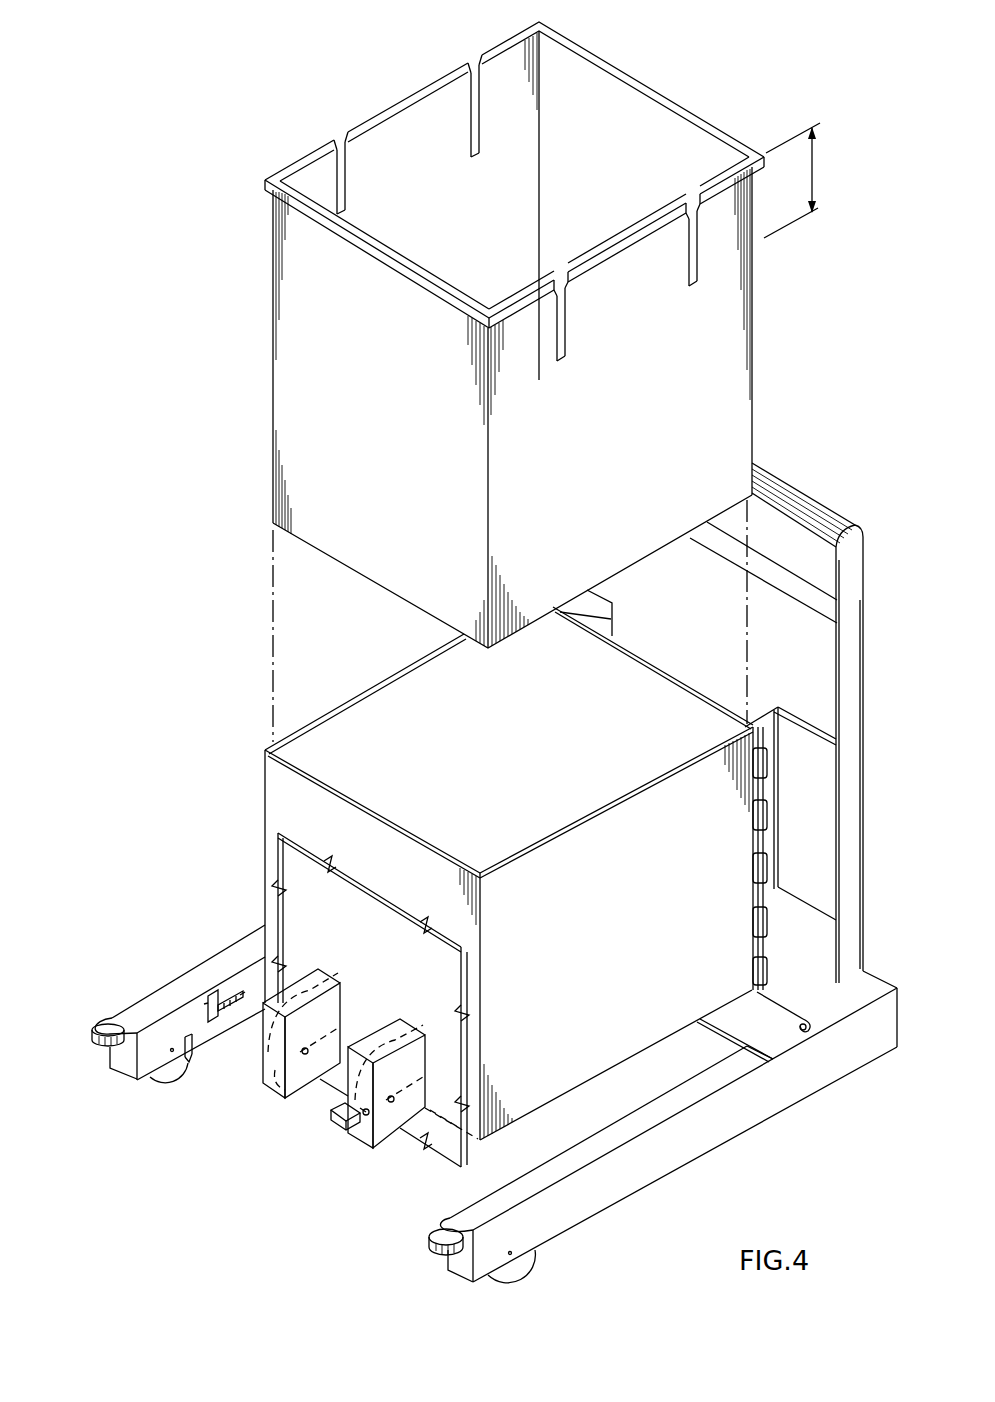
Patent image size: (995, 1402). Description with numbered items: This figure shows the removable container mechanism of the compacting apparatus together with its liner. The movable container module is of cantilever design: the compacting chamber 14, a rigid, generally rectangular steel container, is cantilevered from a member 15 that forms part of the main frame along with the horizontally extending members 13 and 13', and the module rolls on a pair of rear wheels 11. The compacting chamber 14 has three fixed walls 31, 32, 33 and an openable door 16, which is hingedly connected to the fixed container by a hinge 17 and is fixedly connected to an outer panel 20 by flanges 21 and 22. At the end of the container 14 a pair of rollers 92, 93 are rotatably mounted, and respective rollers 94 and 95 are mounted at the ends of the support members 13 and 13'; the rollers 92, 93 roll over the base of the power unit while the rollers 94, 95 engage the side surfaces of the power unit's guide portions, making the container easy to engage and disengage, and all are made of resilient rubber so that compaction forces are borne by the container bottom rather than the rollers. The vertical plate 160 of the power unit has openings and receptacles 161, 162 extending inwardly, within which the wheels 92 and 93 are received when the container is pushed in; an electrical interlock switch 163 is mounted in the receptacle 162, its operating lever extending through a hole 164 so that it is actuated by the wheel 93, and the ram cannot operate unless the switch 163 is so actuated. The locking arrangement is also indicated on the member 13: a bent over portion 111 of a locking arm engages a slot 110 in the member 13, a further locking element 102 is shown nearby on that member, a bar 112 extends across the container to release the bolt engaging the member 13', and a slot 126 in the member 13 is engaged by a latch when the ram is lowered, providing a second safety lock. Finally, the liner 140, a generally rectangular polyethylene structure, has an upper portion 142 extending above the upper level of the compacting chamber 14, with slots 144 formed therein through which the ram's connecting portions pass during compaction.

The rear wheels 11 is at (526, 1282).
The horizontally extending member 13 is at (180, 1002).
The horizontally extending member 13' is at (593, 1164).
The compacting chamber 14 is at (720, 679).
The member 15 is at (862, 986).
The openable door 16 is at (628, 670).
The hinge 17 is at (772, 768).
The outer panel 20 is at (828, 648).
The flange 21 is at (603, 603).
The flange 22 is at (802, 722).
The fixed wall 31 is at (616, 1060).
The fixed wall 32 is at (353, 806).
The fixed wall 33 is at (372, 697).
The roller 92 is at (268, 1086).
The roller 93 is at (392, 1125).
The roller 94 is at (97, 1026).
The roller 95 is at (430, 1243).
The bracket 102 is at (208, 995).
The slot 110 is at (244, 1012).
The bent over portion 111 is at (231, 990).
The bar 112 is at (800, 1021).
The slot 126 is at (189, 1060).
The liner 140 is at (260, 407).
The upper portion 142 is at (820, 162).
The slots 144 is at (341, 140).
The vertical plate 160 is at (428, 910).
The receptacle 161 is at (290, 986).
The receptacle 162 is at (370, 1046).
The electrical interlock switch 163 is at (333, 1122).
The hole 164 is at (366, 1132).